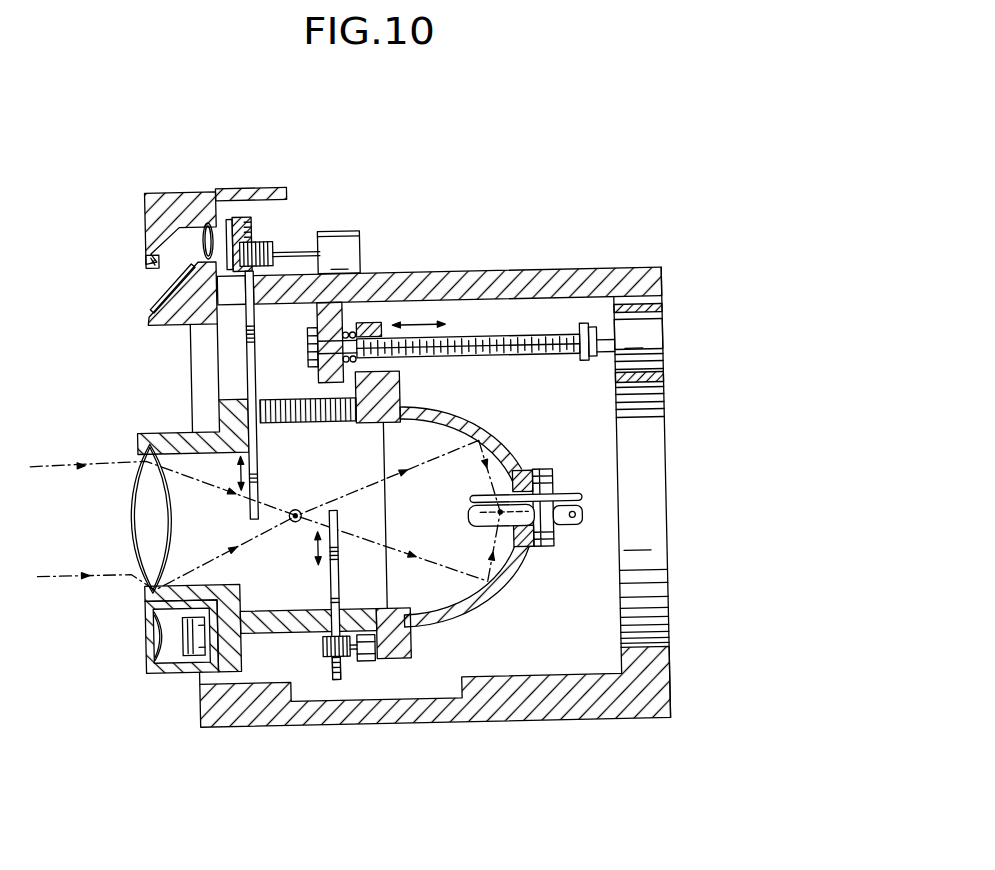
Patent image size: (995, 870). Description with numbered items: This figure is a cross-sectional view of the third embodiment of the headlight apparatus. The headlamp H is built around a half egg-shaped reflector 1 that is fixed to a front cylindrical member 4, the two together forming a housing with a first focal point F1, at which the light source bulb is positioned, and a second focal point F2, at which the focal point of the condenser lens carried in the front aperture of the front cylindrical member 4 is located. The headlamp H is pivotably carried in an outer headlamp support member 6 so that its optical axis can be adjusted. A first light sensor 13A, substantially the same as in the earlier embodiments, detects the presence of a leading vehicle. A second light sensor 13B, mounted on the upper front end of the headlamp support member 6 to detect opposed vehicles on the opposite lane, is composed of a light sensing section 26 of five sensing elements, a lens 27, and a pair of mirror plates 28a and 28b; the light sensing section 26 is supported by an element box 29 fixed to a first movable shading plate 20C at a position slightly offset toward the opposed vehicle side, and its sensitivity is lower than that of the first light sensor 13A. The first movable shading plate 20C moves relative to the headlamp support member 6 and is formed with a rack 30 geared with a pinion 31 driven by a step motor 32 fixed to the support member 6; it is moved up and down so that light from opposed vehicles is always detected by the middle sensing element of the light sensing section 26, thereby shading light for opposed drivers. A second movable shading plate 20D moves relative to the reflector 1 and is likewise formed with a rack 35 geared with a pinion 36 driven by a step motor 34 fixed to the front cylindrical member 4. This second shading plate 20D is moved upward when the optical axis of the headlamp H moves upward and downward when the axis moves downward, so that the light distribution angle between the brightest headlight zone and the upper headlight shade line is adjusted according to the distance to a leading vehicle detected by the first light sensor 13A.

The reflector 1 is at (500, 429).
The front cylindrical member 4 is at (161, 434).
The headlamp support member 6 is at (485, 271).
The headlamp H is at (445, 413).
The first focal point F1 is at (500, 518).
The second focal point F2 is at (295, 506).
The first light sensor 13A is at (158, 676).
The second light sensor 13B is at (166, 184).
The first movable shading plate 20C is at (254, 343).
The second movable shading plate 20D is at (338, 562).
The light sensing section 26 is at (229, 242).
The lens 27 is at (207, 235).
The mirror plate 28a is at (157, 266).
The mirror plate 28b is at (169, 294).
The element box 29 is at (238, 212).
The rack 30 is at (259, 217).
The pinion 31 is at (267, 243).
The step motor 32 is at (350, 229).
The step motor 34 is at (362, 659).
The rack 35 is at (331, 657).
The pinion 36 is at (319, 650).